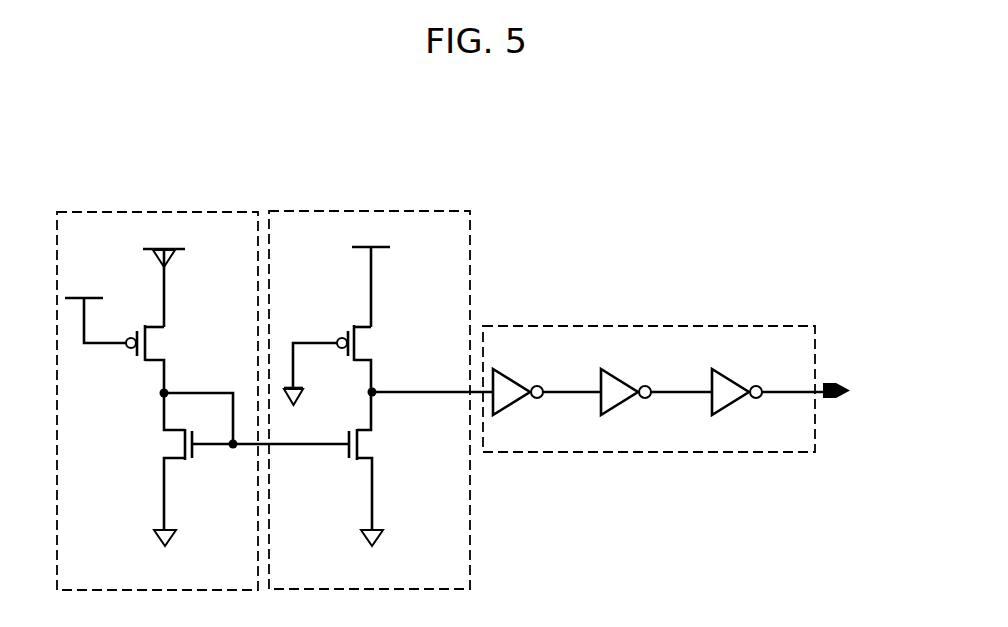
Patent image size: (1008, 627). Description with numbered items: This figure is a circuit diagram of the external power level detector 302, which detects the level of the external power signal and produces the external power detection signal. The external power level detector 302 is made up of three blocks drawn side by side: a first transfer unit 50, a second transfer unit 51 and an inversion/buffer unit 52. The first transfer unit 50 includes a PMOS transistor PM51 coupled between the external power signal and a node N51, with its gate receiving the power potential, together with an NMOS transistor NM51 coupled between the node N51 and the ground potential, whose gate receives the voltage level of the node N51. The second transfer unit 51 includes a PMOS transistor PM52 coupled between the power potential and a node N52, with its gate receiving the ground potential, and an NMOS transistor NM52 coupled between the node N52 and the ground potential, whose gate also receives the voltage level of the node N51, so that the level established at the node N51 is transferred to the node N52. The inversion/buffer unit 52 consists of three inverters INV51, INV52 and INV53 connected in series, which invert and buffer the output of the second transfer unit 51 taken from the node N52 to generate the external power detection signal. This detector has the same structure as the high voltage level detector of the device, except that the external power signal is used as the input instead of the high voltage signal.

The external power level detector 302 is at (739, 190).
The first transfer unit 50 is at (207, 212).
The second transfer unit 51 is at (420, 211).
The inversion/buffer unit 52 is at (760, 326).
The PMOS transistor PM51 is at (152, 345).
The NMOS transistor NM51 is at (170, 461).
The PMOS transistor PM52 is at (360, 320).
The NMOS transistor NM52 is at (390, 461).
The node N51 is at (231, 462).
The node N52 is at (401, 381).
The inverter INV51 is at (511, 380).
The inverter INV52 is at (619, 380).
The inverter INV53 is at (730, 380).